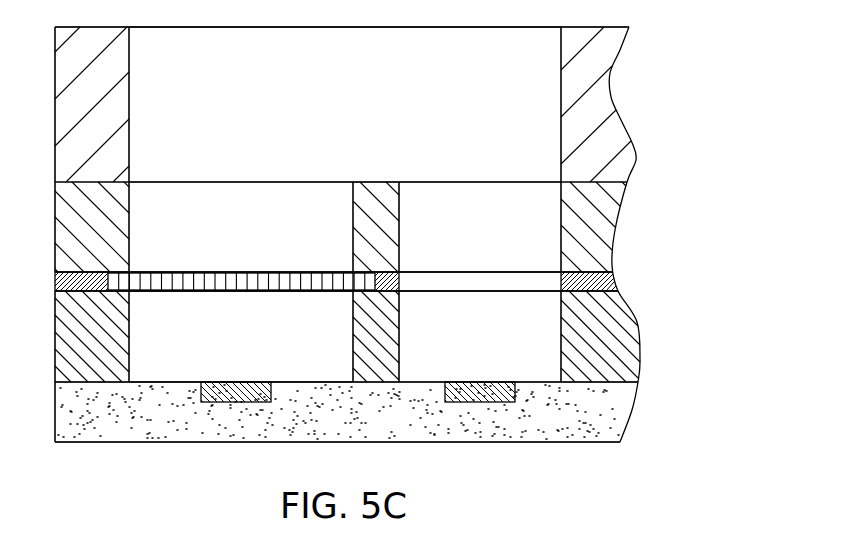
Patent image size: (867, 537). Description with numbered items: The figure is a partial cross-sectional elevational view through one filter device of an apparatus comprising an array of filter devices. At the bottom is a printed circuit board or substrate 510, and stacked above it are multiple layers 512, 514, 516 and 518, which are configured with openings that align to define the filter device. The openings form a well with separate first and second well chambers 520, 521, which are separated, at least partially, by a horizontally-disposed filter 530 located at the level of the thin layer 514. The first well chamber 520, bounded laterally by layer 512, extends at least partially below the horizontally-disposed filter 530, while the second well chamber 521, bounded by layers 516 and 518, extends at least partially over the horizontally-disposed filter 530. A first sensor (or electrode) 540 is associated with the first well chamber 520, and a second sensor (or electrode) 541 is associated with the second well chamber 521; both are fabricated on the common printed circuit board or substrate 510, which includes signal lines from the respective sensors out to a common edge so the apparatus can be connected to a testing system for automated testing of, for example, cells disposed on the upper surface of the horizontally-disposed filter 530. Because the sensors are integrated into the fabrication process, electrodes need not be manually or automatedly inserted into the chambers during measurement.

The printed circuit board or substrate 510 is at (607, 418).
The layer 512 is at (612, 338).
The layer 514 is at (617, 277).
The layer 516 is at (595, 230).
The layer 518 is at (595, 92).
The first well chamber 520 is at (272, 350).
The second well chamber 521 is at (357, 117).
The horizontally-disposed filter 530 is at (240, 280).
The first sensor (or electrode) 540 is at (238, 395).
The second sensor (or electrode) 541 is at (483, 395).